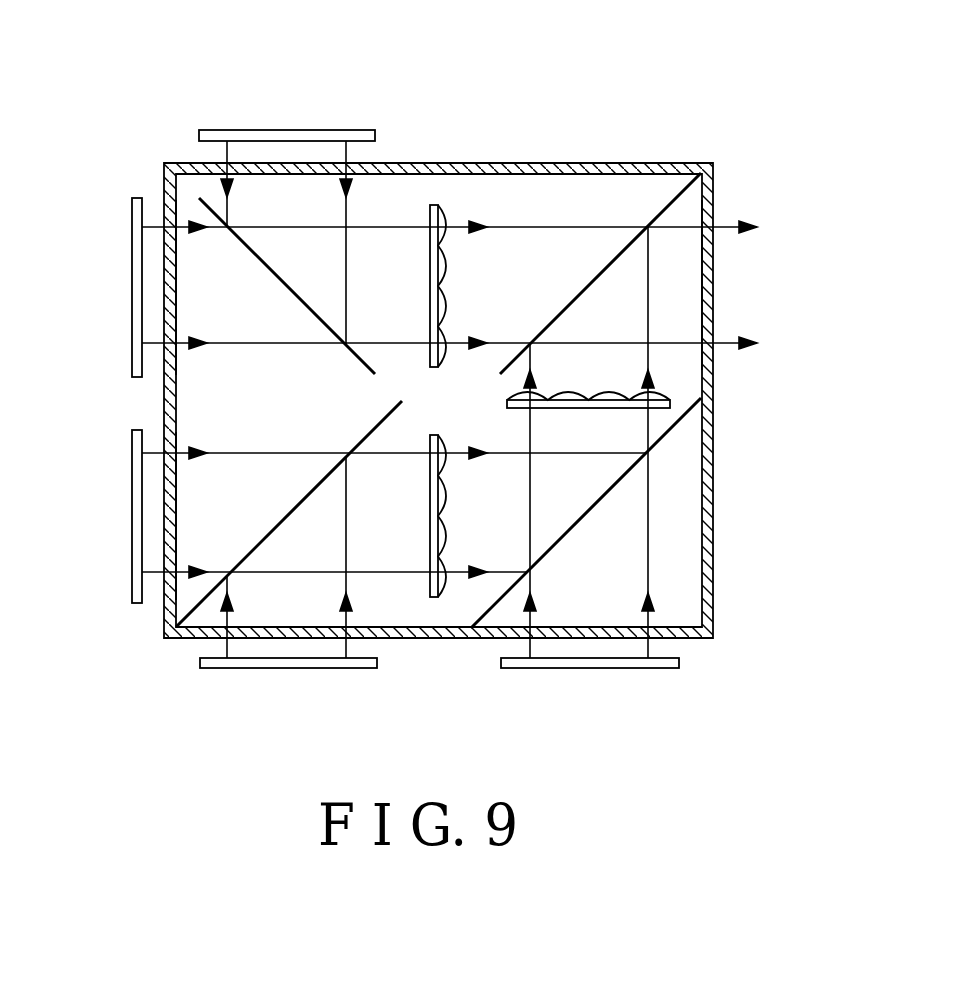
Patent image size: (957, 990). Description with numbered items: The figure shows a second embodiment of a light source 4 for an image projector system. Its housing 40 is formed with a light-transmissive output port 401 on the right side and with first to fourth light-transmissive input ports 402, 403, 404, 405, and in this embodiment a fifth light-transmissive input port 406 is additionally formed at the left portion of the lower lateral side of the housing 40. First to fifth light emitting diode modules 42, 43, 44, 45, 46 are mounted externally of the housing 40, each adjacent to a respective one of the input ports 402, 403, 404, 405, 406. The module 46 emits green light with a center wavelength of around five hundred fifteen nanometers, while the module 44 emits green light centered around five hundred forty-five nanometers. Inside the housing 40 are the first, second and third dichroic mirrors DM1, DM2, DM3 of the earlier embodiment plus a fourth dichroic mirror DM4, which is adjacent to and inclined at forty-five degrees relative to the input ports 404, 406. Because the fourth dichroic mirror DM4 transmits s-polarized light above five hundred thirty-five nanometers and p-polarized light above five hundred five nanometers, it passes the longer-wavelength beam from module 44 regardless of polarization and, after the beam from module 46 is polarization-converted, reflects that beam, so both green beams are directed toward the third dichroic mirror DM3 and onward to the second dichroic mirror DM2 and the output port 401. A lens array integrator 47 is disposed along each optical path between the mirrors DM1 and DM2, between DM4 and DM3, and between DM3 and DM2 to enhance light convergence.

The light source 4 is at (468, 130).
The housing 40 is at (520, 167).
The light-transmissive output port 401 is at (712, 297).
The first light-transmissive input port 402 is at (210, 165).
The second light-transmissive input port 403 is at (170, 206).
The third light-transmissive input port 404 is at (170, 533).
The fourth light-transmissive input port 405 is at (555, 625).
The fifth light-transmissive input port 406 is at (267, 625).
The first light emitting diode module 42 is at (374, 143).
The second light emitting diode module 43 is at (133, 246).
The third light emitting diode module 44 is at (133, 596).
The fourth light emitting diode module 45 is at (613, 663).
The fifth light emitting diode module 46 is at (313, 663).
The lens array integrator 47 is at (431, 283).
The first dichroic mirror DM1 is at (326, 322).
The second dichroic mirror DM2 is at (548, 325).
The third dichroic mirror DM3 is at (567, 533).
The fourth dichroic mirror DM4 is at (263, 540).